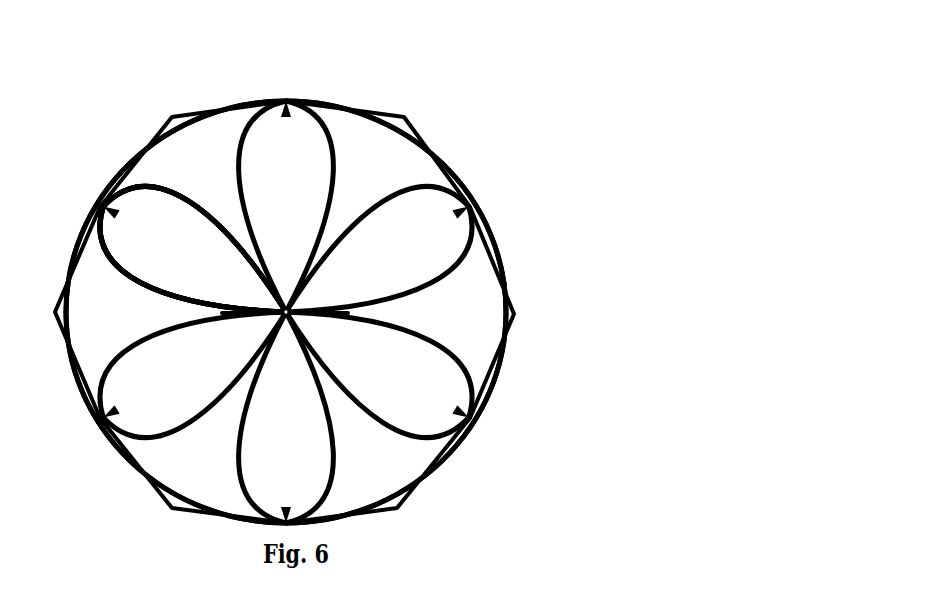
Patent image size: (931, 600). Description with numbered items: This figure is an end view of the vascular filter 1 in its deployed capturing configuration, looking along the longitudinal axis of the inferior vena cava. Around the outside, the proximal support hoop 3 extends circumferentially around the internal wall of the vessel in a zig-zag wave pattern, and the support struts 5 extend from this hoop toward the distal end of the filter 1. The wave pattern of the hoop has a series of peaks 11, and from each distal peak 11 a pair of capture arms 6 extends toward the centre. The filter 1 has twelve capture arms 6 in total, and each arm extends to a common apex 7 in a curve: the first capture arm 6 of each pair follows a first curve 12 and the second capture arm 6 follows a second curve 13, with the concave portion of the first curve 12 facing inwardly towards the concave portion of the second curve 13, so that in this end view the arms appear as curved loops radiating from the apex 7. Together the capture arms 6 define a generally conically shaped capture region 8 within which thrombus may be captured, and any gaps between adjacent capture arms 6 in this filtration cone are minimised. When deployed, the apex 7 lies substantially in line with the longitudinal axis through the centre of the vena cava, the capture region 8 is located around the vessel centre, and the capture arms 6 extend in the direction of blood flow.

The filter 1 is at (446, 124).
The proximal support hoop 3 is at (130, 474).
The support struts 5 is at (104, 196).
The capture arms 6 is at (333, 437).
The apex 7 is at (287, 302).
The capture region 8 is at (240, 298).
The peak 11 is at (470, 207).
The first curve 12 is at (193, 302).
The second curve 13 is at (145, 192).